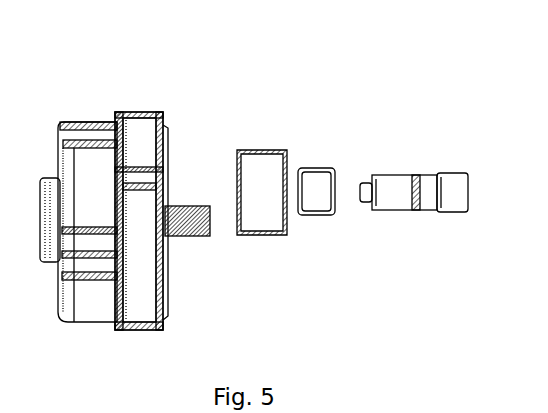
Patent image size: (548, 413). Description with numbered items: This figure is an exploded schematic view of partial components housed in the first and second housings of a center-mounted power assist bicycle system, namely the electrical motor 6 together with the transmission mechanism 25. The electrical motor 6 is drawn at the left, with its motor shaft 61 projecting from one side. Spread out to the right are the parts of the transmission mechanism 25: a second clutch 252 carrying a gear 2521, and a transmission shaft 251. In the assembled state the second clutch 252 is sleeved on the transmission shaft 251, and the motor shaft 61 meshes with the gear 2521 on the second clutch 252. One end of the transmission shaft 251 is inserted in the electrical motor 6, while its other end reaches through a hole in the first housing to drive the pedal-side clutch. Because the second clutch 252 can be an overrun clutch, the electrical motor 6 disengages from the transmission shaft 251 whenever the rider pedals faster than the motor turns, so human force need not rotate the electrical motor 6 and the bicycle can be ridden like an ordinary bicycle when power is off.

The electrical motor 6 is at (90, 110).
The motor shaft 61 is at (178, 238).
The transmission mechanism 25 is at (328, 53).
The second clutch 252 is at (253, 150).
The gear 2521 is at (315, 168).
The transmission shaft 251 is at (430, 173).